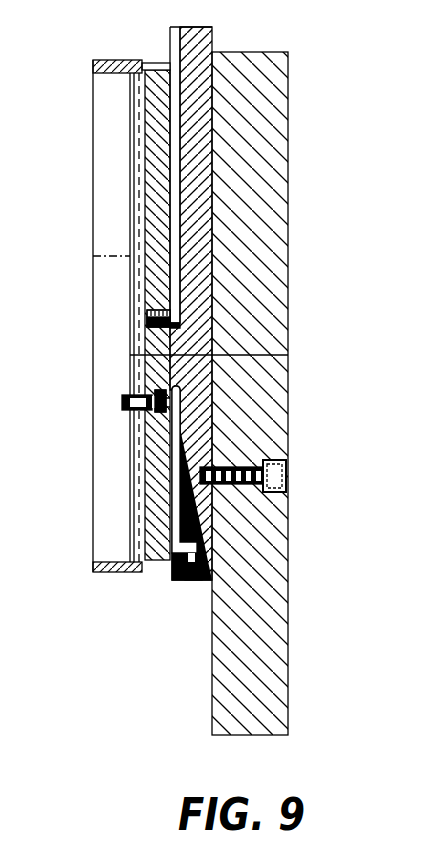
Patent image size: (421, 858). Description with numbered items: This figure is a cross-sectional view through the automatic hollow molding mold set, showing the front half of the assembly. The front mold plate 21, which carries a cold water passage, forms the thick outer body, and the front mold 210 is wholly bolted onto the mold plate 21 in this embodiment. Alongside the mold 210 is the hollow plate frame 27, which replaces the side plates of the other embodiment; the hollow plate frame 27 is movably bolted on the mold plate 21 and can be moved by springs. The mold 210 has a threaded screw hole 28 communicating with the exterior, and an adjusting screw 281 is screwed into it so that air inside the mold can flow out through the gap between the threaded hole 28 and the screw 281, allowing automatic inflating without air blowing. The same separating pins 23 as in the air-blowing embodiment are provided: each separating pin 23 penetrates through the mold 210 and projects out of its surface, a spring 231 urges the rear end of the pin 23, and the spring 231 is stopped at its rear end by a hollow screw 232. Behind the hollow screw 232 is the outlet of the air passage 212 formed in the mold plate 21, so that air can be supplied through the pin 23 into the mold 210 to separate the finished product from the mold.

The front mold plate 21 is at (289, 207).
The front mold 210 is at (153, 80).
The hollow plate frame 27 is at (100, 137).
The screw hole 28 is at (107, 298).
The adjusting screw 281 is at (147, 320).
The separating pin 23 is at (128, 402).
The spring 231 is at (148, 410).
The hollow screw 232 is at (160, 415).
The air passage 212 is at (190, 582).